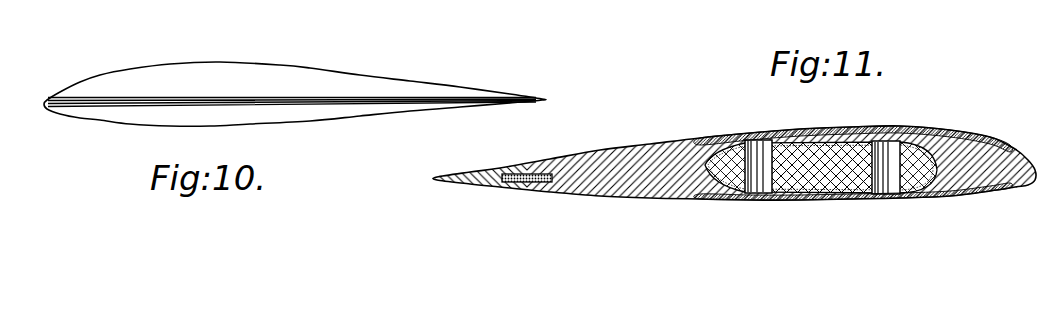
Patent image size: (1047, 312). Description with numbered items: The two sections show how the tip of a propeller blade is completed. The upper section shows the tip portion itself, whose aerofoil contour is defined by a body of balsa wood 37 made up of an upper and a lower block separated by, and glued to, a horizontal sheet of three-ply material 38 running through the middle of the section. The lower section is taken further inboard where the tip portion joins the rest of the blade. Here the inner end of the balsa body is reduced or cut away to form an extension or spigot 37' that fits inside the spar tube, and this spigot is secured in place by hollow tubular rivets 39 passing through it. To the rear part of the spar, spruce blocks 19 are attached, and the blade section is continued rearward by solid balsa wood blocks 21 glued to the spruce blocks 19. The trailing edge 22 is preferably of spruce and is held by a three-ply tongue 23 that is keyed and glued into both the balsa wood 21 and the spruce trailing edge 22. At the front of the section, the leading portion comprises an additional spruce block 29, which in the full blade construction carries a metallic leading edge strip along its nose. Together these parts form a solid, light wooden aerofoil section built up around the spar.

In FIG. 10, the body of balsa wood 37 is at (167, 65).
In FIG. 10, the horizontal sheet of 3-ply material 38 is at (350, 100).
In FIG. 11, the trailing edge 22 is at (443, 181).
In FIG. 11, the 3-ply tongue 23 is at (525, 174).
In FIG. 11, the solid balsa wood blocks 21 is at (623, 158).
In FIG. 11, the spruce blocks 19 is at (709, 148).
In FIG. 11, the hollow tubular rivets 39 is at (757, 142).
In FIG. 11, the extension or spigot 37' is at (822, 145).
In FIG. 11, the spruce block 29 is at (975, 150).